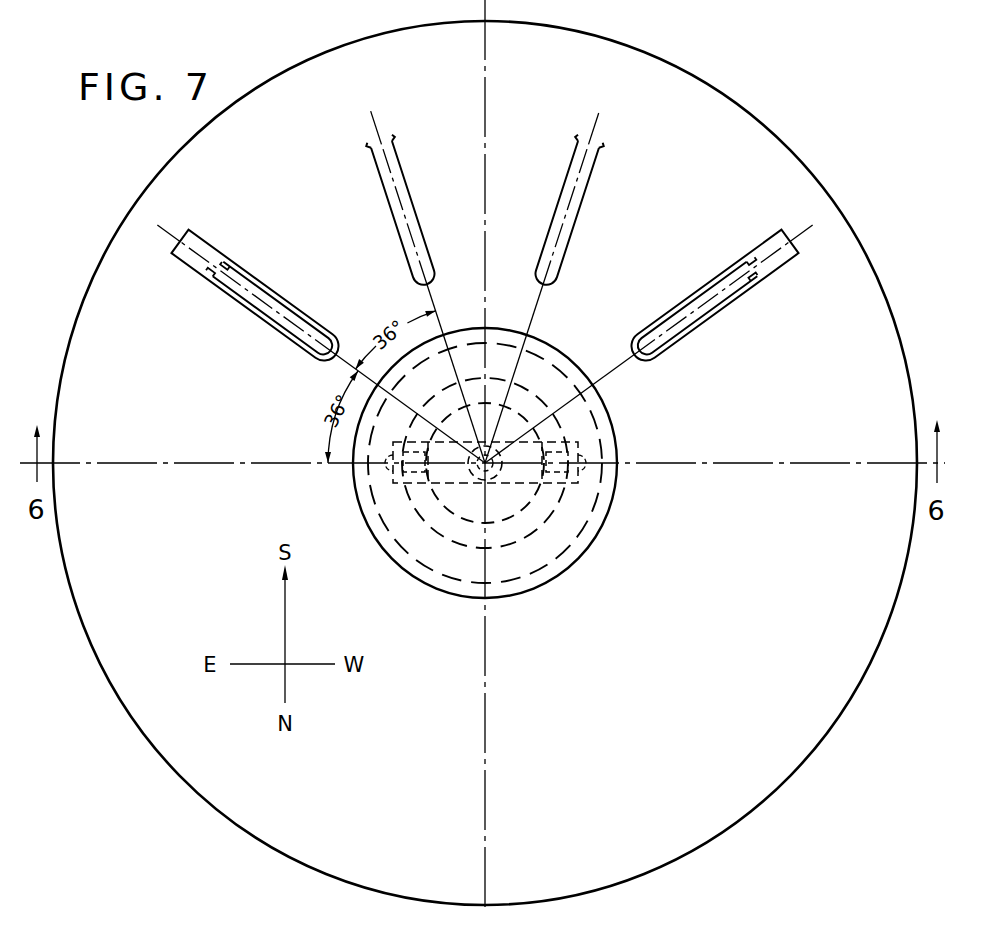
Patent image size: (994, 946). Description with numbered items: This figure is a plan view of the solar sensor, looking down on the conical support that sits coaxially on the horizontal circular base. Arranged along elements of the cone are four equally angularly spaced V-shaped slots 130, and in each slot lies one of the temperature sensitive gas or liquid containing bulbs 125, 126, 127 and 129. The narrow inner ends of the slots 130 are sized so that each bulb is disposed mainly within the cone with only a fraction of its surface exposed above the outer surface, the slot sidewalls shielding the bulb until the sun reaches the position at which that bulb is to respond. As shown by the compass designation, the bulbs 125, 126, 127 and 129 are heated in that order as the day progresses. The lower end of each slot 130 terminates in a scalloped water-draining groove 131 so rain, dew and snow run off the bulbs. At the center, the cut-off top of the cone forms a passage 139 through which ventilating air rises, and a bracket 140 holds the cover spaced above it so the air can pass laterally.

The temperature sensitive bulb 125 is at (290, 312).
The temperature sensitive bulb 126 is at (415, 223).
The temperature sensitive bulb 127 is at (563, 232).
The temperature sensitive bulb 129 is at (708, 307).
The V-shaped slot 130 is at (262, 290).
The water-draining groove 131 is at (215, 252).
The passage 139 is at (507, 497).
The bracket 140 is at (451, 480).